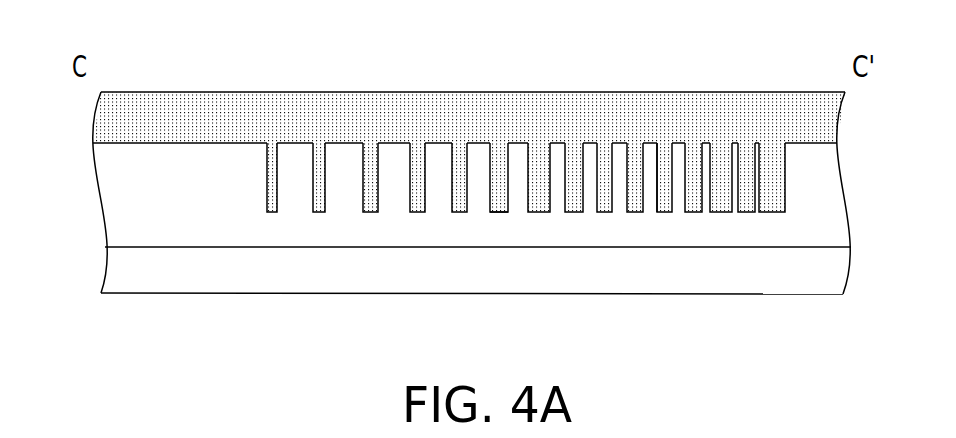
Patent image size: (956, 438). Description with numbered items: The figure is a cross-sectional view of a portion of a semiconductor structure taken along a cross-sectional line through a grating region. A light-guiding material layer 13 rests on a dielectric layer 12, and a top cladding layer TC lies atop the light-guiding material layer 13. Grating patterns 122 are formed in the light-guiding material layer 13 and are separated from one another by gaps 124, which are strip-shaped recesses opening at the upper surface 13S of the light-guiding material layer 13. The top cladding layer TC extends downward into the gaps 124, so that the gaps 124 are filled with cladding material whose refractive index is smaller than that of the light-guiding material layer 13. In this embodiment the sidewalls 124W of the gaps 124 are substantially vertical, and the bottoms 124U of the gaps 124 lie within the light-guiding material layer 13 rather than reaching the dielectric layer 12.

The dielectric layer 12 is at (832, 262).
The light-guiding material layer 13 is at (832, 218).
The upper surface of the light-guiding material layer 13S is at (117, 150).
The top cladding layer TC is at (506, 114).
The grating patterns 122 is at (352, 115).
The gaps 124 is at (526, 114).
The bottoms of the gaps 124U is at (498, 202).
The sidewalls of the gaps 124W is at (660, 159).